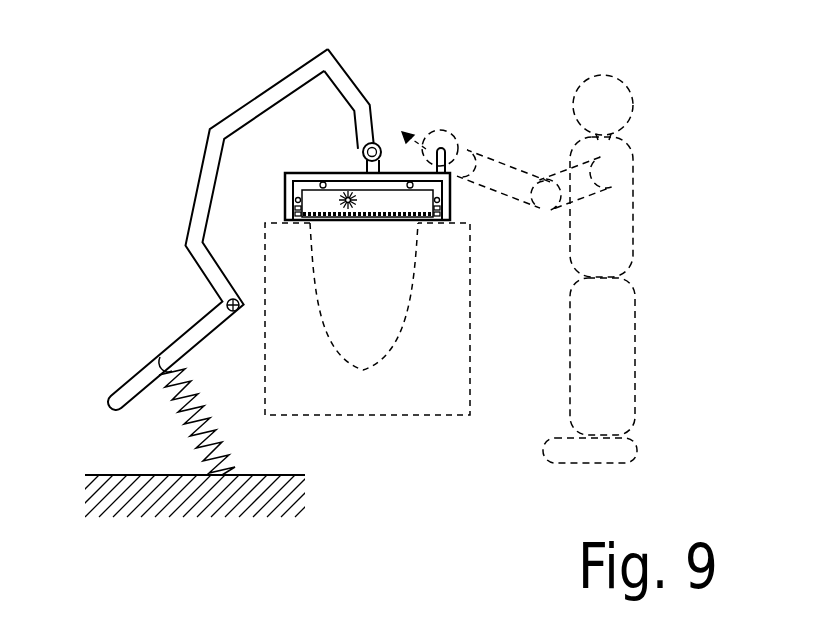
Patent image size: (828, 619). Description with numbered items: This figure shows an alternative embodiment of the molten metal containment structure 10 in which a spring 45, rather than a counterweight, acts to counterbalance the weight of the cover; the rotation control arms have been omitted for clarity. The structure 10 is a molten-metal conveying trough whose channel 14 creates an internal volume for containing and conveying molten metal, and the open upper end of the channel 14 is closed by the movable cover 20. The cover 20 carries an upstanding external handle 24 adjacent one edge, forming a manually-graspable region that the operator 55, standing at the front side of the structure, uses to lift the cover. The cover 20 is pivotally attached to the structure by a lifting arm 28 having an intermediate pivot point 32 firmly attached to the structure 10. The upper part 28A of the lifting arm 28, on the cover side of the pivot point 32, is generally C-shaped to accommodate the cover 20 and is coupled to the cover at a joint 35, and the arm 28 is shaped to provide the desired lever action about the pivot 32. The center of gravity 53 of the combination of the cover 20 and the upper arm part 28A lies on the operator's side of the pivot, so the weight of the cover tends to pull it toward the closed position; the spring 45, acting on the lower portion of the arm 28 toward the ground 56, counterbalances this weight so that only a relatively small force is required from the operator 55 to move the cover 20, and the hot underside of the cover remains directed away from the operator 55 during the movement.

The molten metal containment structure 10 is at (361, 402).
The channel 14 is at (385, 321).
The movable cover 20 is at (295, 171).
The external handle 24 is at (441, 147).
The lifting arm 28 is at (327, 43).
The upper arm part 28A is at (342, 72).
The pivot point 32 is at (246, 306).
The ball joint 35 is at (362, 150).
The spring 45 is at (203, 432).
The center of gravity 53 is at (342, 205).
The operator 55 is at (618, 322).
The ground 56 is at (103, 474).